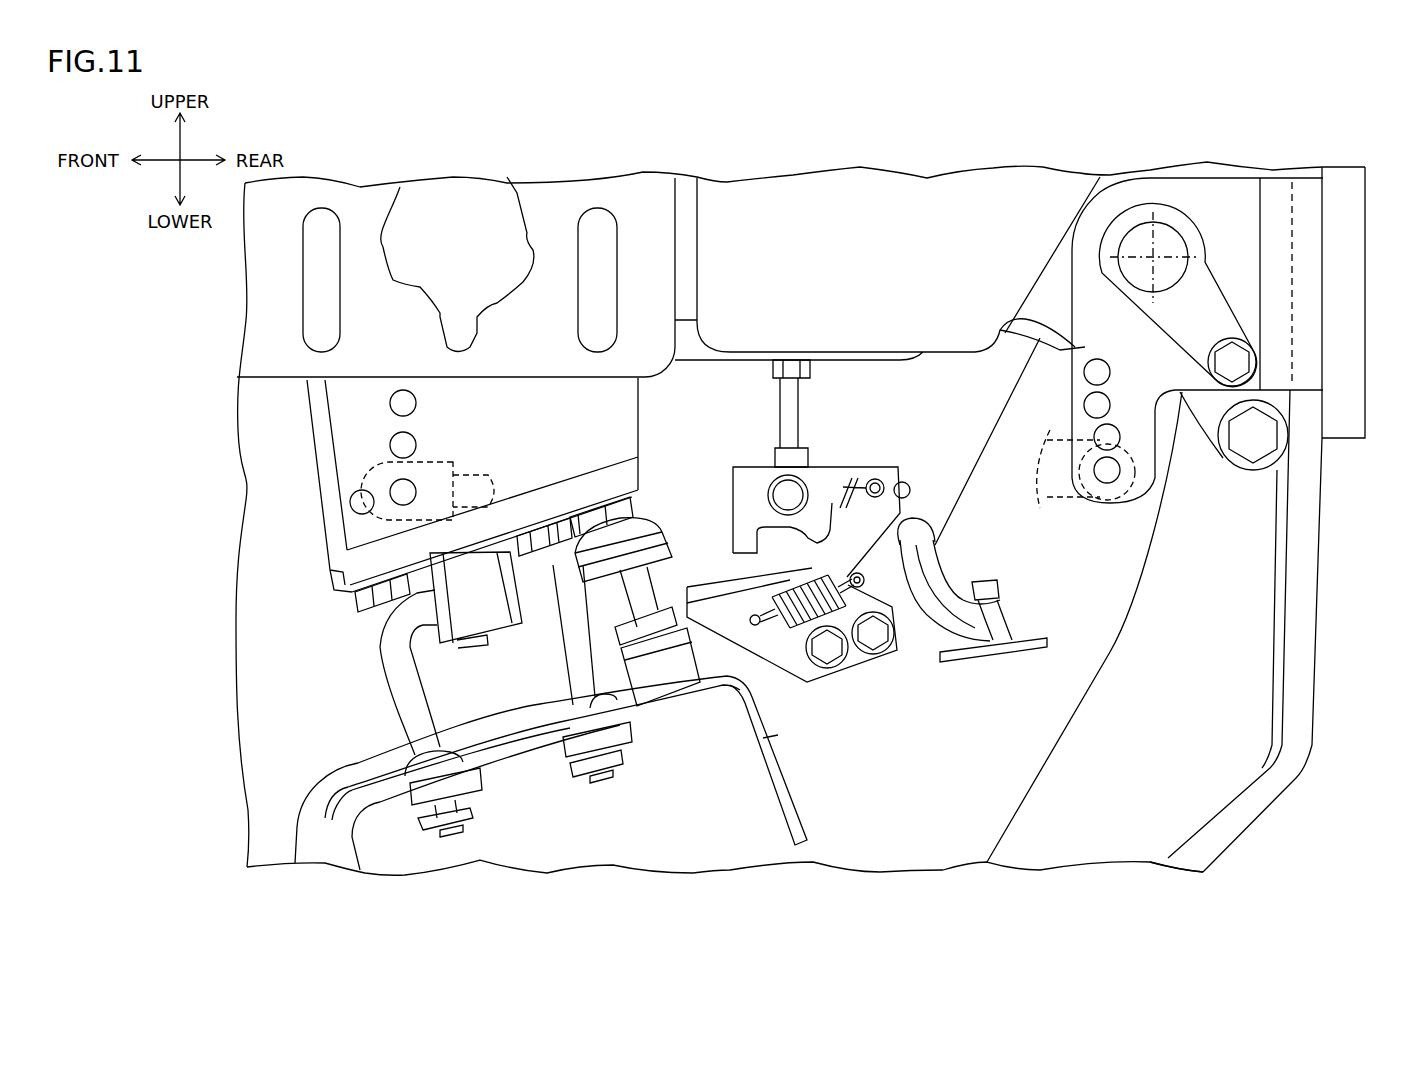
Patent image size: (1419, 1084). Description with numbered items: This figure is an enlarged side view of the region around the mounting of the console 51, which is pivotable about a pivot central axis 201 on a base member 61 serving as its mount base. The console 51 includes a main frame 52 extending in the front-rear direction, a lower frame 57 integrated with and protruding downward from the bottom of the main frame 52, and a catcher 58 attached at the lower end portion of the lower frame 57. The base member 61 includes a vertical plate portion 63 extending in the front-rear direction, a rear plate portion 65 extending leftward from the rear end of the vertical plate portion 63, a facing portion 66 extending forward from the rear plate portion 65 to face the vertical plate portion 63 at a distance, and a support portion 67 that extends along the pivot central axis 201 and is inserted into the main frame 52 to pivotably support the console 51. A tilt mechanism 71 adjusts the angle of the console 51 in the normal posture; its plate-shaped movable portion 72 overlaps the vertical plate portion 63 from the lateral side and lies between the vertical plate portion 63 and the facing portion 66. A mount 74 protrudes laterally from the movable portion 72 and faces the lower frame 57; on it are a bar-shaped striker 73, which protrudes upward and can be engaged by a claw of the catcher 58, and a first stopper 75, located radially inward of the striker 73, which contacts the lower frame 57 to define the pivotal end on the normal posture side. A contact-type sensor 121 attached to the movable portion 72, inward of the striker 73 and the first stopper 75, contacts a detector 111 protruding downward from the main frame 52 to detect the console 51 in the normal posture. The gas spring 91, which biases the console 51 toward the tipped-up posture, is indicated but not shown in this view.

The console 51 is at (235, 304).
The main frame 52 is at (888, 208).
The lower frame 57 is at (362, 448).
The catcher 58 is at (455, 595).
The base member 61 is at (1167, 875).
The vertical plate portion 63 is at (1227, 779).
The rear plate portion 65 is at (1305, 272).
The facing portion 66 is at (1230, 210).
The support portion 67 is at (1168, 243).
The tilt mechanism 71 is at (1026, 836).
The movable portion 72 is at (680, 828).
The striker 73 is at (410, 702).
The mount 74 is at (333, 850).
The first stopper 75 is at (590, 567).
The gas spring 91 is at (1060, 490).
The detector 111 is at (782, 410).
The sensor 121 is at (820, 527).
The pivot central axis 201 is at (1152, 257).